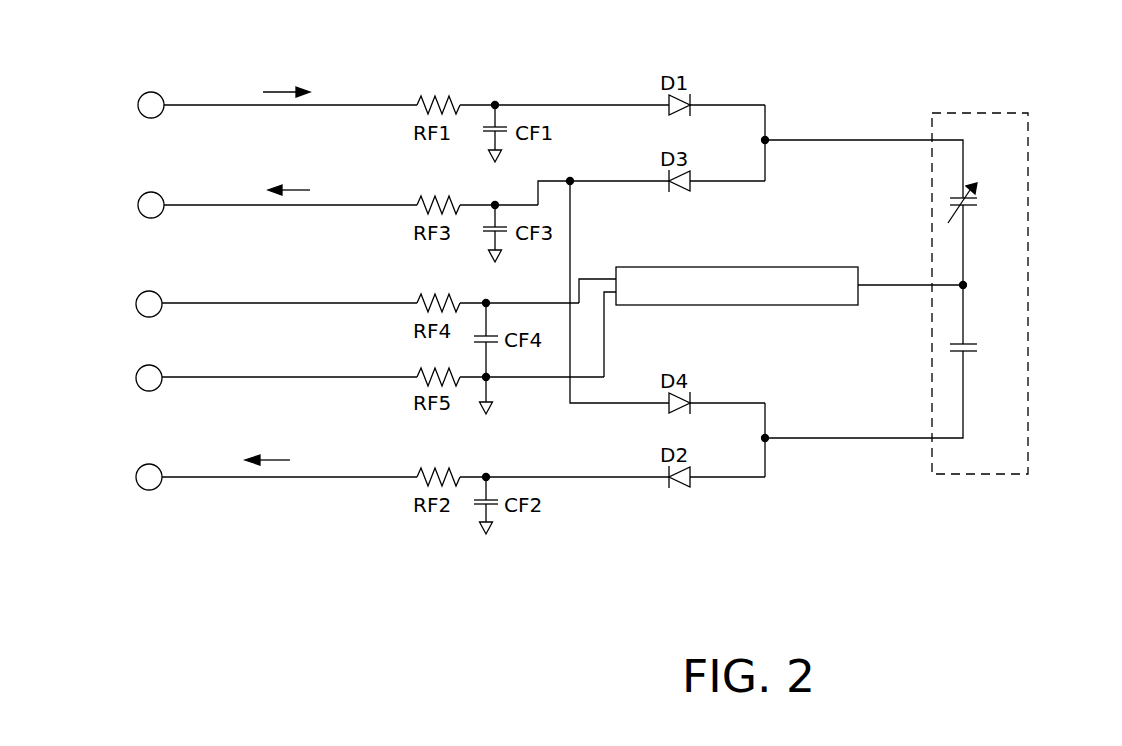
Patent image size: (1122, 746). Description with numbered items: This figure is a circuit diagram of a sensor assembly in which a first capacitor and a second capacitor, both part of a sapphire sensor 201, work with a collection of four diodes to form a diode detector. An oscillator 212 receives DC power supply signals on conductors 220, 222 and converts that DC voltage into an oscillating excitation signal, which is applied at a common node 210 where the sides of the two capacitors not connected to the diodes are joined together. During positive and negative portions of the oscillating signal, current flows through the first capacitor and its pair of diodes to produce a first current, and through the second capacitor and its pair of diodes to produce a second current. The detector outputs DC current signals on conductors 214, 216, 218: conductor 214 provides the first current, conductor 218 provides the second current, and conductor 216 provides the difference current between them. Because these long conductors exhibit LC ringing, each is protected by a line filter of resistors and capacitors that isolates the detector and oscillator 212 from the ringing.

The conductor 214 is at (228, 105).
The conductor 216 is at (228, 205).
The conductor 220 is at (197, 303).
The conductor 222 is at (212, 378).
The conductor 218 is at (183, 477).
The oscillator 212 is at (745, 306).
The common node 210 is at (963, 285).
The sapphire sensor 201 is at (1002, 474).